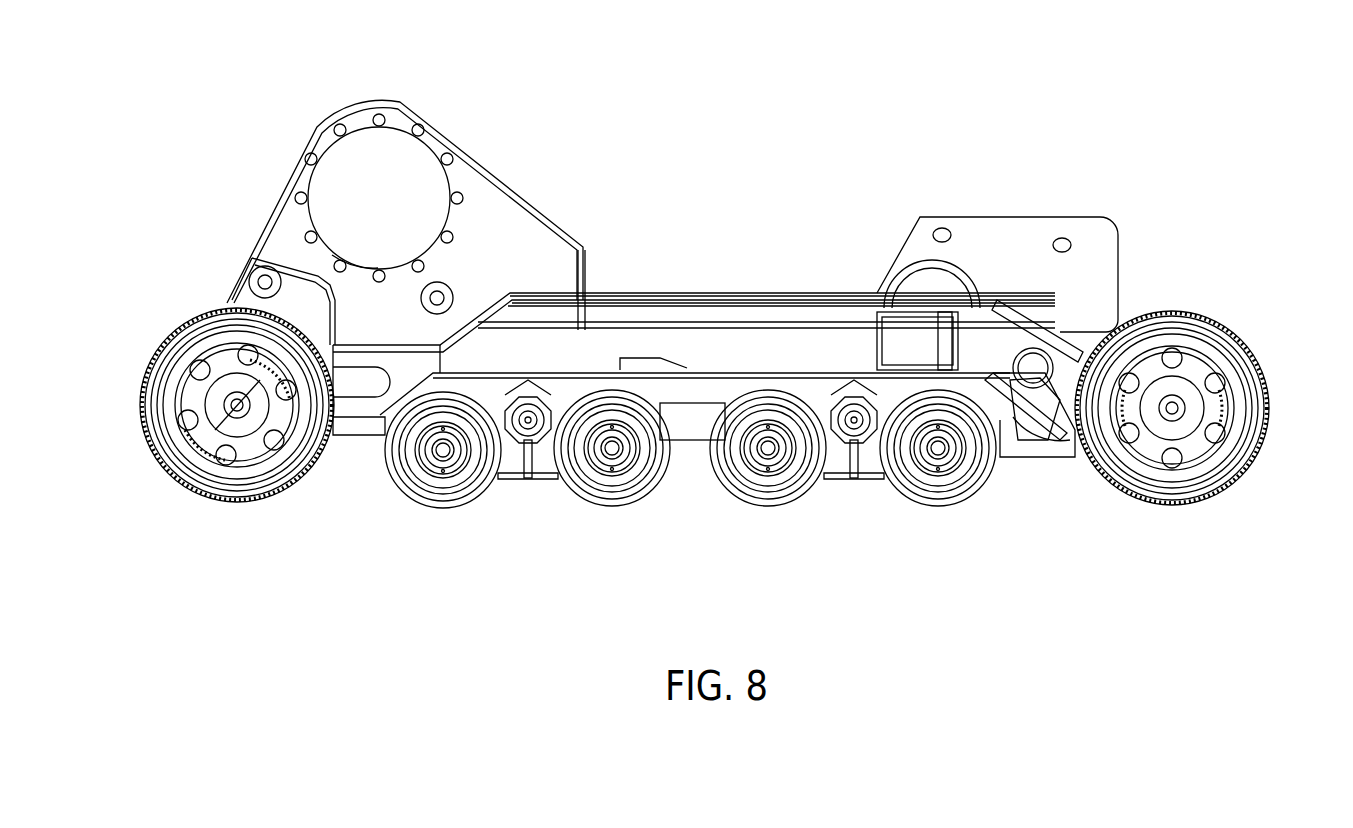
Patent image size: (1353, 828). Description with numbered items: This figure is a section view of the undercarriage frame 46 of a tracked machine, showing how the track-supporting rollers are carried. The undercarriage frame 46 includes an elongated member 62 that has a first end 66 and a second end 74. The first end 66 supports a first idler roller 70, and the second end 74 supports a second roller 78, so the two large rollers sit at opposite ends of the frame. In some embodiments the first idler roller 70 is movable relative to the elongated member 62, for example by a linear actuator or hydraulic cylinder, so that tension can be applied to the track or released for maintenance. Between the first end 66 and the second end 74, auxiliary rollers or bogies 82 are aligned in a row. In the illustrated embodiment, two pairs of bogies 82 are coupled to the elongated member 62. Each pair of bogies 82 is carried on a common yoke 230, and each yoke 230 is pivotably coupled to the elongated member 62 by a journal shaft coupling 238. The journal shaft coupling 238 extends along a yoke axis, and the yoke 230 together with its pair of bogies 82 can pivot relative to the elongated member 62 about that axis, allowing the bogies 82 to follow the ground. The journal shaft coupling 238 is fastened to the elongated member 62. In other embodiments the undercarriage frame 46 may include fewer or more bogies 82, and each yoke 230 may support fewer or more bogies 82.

The undercarriage frame 46 is at (815, 98).
The elongated member 62 is at (706, 298).
The first end 66 is at (1083, 452).
The first idler roller 70 is at (1170, 492).
The second end 74 is at (360, 372).
The second roller 78 is at (228, 488).
The bogies 82 is at (446, 500).
The yoke 230 is at (525, 478).
The journal shaft coupling 238 is at (540, 398).